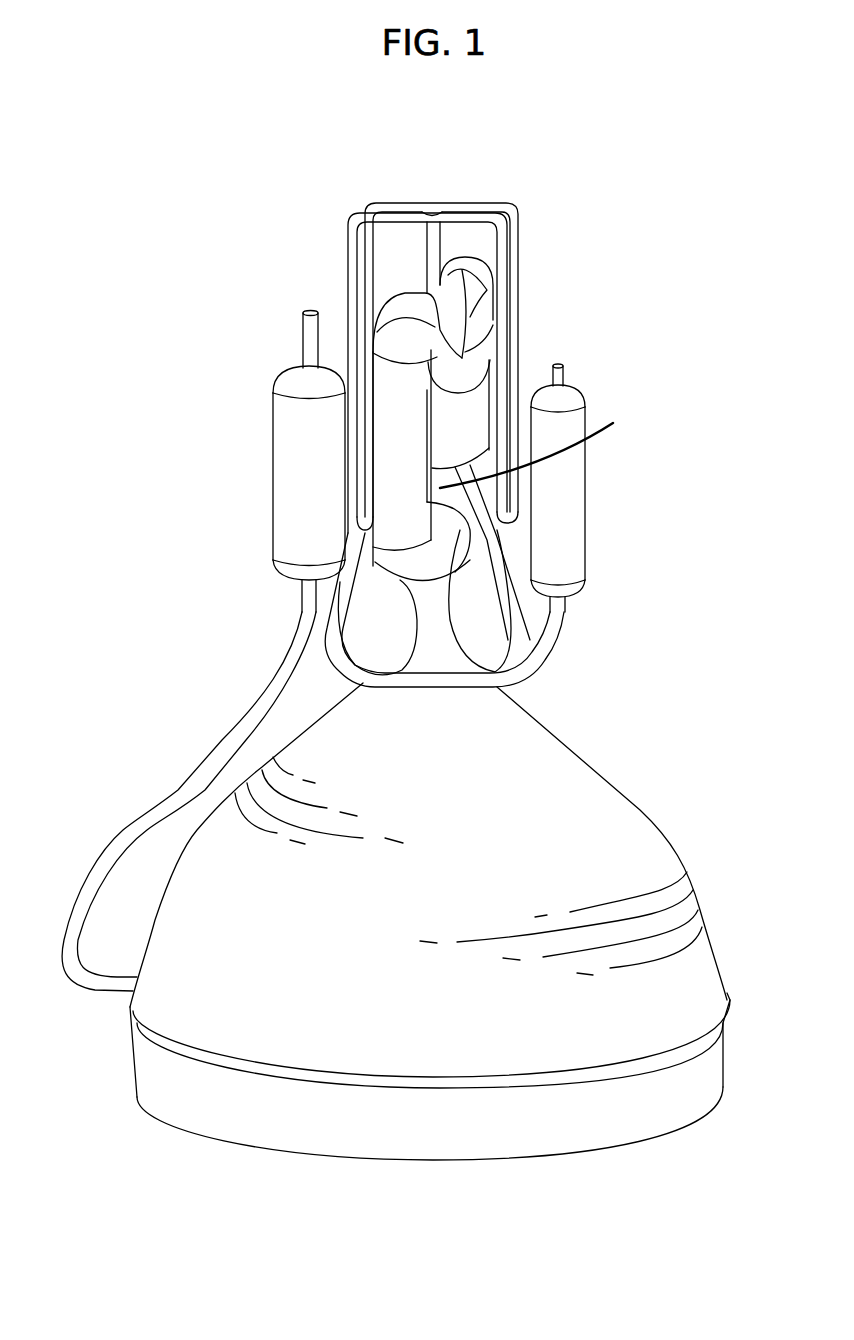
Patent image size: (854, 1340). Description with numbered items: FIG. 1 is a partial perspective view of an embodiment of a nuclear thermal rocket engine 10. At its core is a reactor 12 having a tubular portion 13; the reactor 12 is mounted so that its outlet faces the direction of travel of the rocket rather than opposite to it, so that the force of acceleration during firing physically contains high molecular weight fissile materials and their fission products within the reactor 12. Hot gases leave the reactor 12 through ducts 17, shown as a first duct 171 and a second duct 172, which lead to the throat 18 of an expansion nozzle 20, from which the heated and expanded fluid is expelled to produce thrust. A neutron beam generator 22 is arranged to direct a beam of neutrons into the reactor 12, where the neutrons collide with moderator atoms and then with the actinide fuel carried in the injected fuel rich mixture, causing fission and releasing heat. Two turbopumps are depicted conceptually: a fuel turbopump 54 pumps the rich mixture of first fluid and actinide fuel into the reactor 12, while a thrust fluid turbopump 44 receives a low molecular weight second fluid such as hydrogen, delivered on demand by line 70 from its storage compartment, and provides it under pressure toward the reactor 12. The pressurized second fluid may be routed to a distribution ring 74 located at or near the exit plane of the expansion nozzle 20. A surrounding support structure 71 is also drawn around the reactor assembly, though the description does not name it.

The nuclear thermal rocket engine 10 is at (638, 340).
The reactor 12 is at (490, 360).
The tubular portion 13 is at (473, 431).
The ducts 17 is at (436, 411).
The duct 171 is at (397, 335).
The duct 172 is at (483, 272).
The throat 18 is at (423, 623).
The expansion nozzle 20 is at (650, 818).
The neutron beam generator 22 is at (543, 451).
The thrust fluid turbopump 44 is at (290, 500).
The fuel turbopump 54 is at (568, 502).
The line 70 is at (177, 787).
The support frame 71 is at (488, 213).
The distribution ring 74 is at (423, 1080).